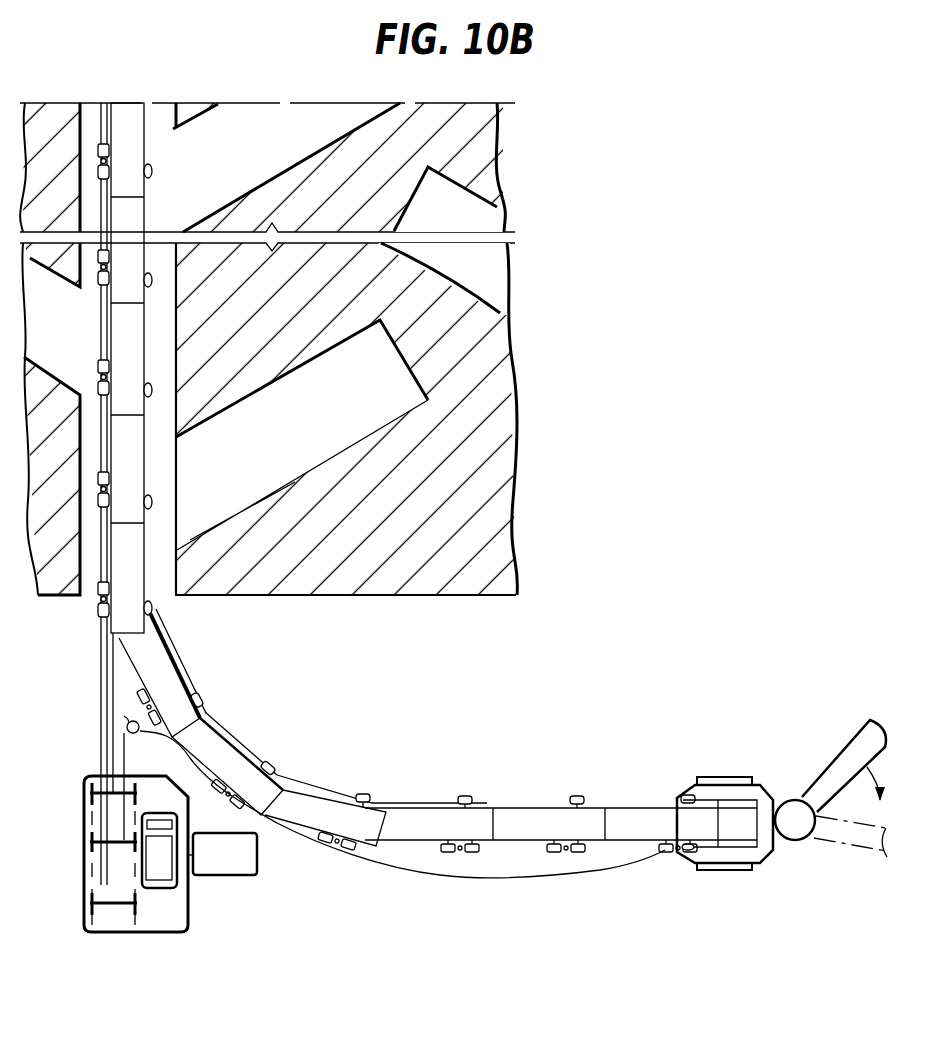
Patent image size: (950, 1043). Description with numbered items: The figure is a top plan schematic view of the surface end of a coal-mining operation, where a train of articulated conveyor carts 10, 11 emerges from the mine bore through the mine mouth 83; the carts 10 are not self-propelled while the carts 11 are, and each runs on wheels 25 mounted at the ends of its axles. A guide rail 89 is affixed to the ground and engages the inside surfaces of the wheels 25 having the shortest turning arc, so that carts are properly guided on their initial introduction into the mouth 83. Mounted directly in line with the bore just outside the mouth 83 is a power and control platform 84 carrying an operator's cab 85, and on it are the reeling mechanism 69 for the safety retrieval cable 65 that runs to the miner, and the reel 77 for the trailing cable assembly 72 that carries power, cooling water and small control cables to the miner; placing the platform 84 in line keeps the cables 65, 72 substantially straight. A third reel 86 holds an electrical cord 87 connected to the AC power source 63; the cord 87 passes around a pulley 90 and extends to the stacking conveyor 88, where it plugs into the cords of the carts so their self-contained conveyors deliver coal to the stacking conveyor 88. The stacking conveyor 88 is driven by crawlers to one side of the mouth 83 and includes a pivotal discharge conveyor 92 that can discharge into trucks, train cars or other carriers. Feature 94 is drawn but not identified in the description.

The conveyor cart 10 is at (156, 221).
The self-propelled conveyor cart 11 is at (156, 342).
The wheels 25 is at (370, 794).
The AC power source 63 is at (257, 858).
The safety retrieval cable 65 is at (126, 727).
The reeling mechanism 69 is at (86, 846).
The trailing cable assembly 72 is at (103, 640).
The reel 77 is at (86, 910).
The mine mouth 83 is at (166, 585).
The power and control platform 84 is at (176, 920).
The operator's cab 85 is at (170, 874).
The third reel 86 is at (86, 797).
The electrical cord 87 is at (115, 752).
The stacking conveyor 88 is at (720, 778).
The guide rail 89 is at (252, 757).
The pulley 90 is at (122, 714).
The discharge conveyor 92 is at (818, 772).
The formation ledge 94 is at (196, 108).